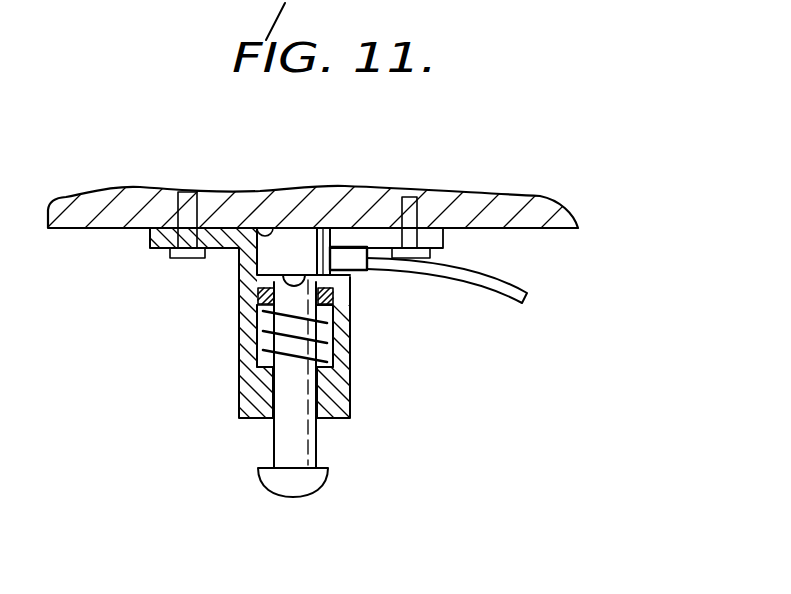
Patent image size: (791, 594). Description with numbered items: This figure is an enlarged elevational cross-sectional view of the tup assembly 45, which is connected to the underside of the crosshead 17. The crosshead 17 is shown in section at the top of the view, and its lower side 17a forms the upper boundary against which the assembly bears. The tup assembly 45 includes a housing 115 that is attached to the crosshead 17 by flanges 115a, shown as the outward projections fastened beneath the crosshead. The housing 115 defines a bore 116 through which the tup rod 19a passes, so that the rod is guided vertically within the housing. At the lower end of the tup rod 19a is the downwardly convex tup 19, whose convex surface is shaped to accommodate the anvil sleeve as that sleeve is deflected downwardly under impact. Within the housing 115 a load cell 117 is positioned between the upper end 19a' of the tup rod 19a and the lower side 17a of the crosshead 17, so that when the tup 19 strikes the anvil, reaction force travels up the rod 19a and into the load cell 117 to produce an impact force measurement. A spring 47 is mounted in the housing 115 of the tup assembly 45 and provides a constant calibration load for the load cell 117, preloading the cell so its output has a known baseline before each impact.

The crosshead 17 is at (538, 210).
The lower side of the crosshead 17a is at (258, 230).
The load cell 117 is at (298, 238).
The flanges 115a is at (150, 250).
The housing 115 is at (352, 390).
The tup assembly 45 is at (236, 380).
The spring 47 is at (262, 340).
The tup rod 19a is at (374, 377).
The upper end of the tup rod 19a' is at (370, 316).
The tup 19 is at (312, 480).
The bore 116 is at (283, 410).